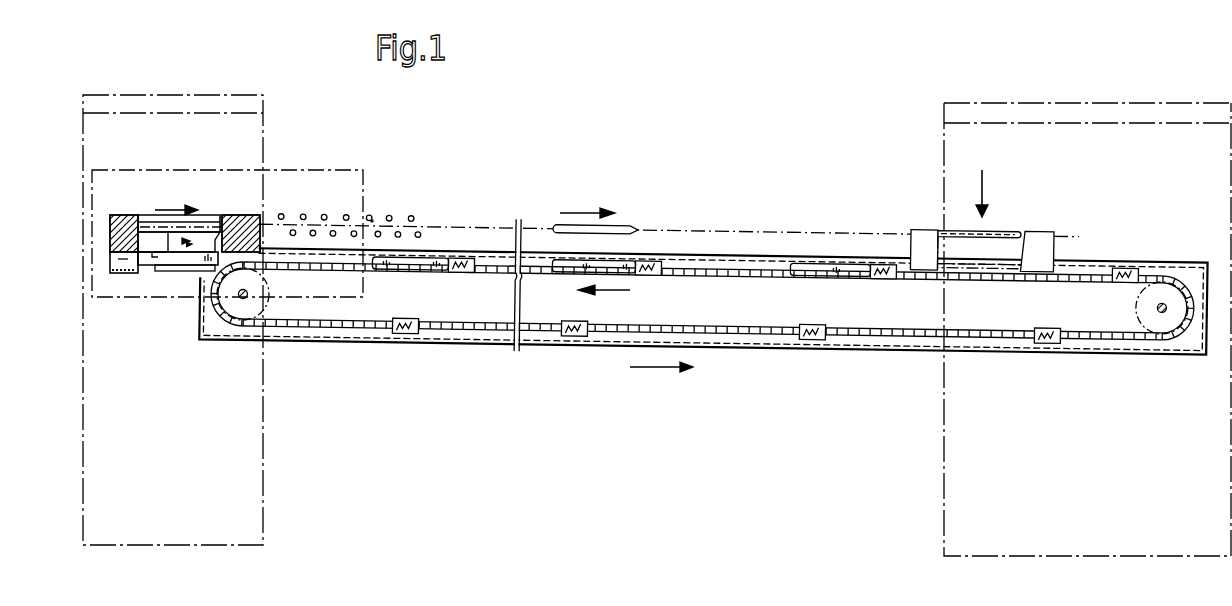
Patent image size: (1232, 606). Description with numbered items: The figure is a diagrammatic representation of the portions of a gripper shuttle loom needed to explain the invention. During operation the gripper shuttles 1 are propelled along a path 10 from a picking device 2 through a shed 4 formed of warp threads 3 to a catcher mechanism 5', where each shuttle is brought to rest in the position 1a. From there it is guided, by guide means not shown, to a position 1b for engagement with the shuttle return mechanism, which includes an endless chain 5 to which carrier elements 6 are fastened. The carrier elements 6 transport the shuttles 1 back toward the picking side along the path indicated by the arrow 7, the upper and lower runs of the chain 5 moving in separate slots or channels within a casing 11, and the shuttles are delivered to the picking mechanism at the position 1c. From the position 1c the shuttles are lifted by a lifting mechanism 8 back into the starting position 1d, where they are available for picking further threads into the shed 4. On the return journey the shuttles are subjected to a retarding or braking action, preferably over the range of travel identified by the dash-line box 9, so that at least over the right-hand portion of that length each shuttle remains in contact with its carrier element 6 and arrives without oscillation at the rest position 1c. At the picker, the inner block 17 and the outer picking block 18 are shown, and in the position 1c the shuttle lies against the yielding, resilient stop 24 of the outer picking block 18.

The gripper shuttle 1 is at (432, 258).
The rest position 1a is at (1003, 233).
The engagement position 1b is at (1030, 262).
The delivery position 1c is at (148, 263).
The starting position 1d is at (148, 218).
The picking device 2 is at (264, 505).
The warp threads 3 is at (392, 213).
The shed 4 is at (335, 217).
The endless chain 5 is at (703, 301).
The catcher mechanism 5' is at (1066, 329).
The carrier element 6 is at (467, 262).
The arrow 7 is at (614, 291).
The lifting mechanism 8 is at (200, 241).
The dash-line box 9 is at (130, 170).
The path 10 is at (172, 209).
The casing 11 is at (457, 343).
The inner block 17 is at (252, 215).
The outer picking block 18 is at (112, 215).
The resilient stop 24 is at (120, 275).